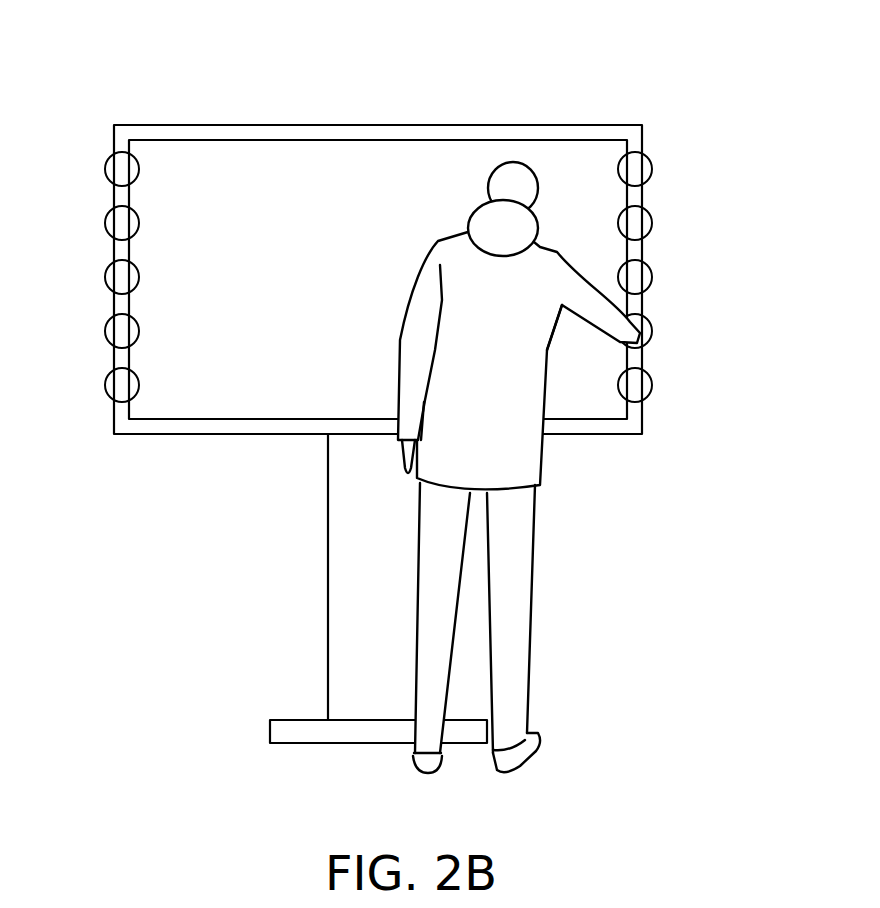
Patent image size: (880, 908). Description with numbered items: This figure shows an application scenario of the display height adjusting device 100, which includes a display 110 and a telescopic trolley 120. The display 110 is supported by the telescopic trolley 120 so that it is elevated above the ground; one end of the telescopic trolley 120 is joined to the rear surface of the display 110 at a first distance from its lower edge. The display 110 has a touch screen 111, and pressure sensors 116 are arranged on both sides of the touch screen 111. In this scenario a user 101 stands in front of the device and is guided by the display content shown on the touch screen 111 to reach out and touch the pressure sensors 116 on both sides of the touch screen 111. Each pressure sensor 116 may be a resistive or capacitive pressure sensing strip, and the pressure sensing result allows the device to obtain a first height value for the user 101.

The display height adjusting device 100 is at (653, 68).
The user 101 is at (515, 587).
The display 110 is at (203, 428).
The touch screen 111 is at (343, 158).
The pressure sensor 116 is at (91, 152).
The telescopic trolley 120 is at (340, 560).